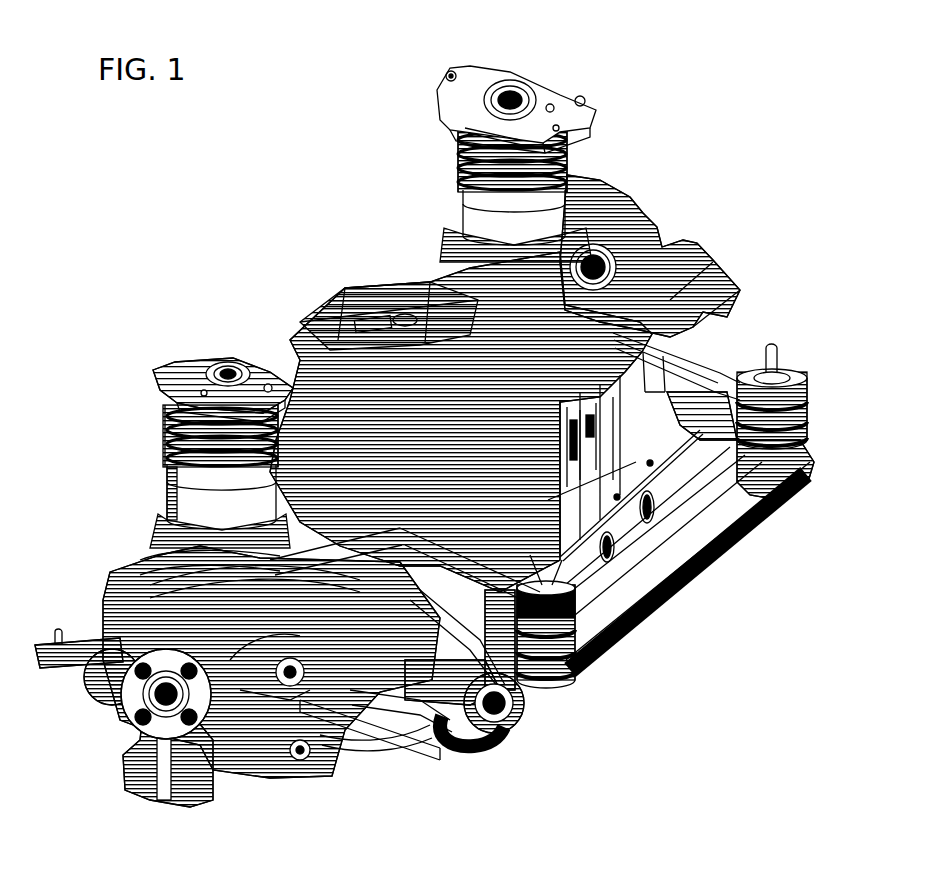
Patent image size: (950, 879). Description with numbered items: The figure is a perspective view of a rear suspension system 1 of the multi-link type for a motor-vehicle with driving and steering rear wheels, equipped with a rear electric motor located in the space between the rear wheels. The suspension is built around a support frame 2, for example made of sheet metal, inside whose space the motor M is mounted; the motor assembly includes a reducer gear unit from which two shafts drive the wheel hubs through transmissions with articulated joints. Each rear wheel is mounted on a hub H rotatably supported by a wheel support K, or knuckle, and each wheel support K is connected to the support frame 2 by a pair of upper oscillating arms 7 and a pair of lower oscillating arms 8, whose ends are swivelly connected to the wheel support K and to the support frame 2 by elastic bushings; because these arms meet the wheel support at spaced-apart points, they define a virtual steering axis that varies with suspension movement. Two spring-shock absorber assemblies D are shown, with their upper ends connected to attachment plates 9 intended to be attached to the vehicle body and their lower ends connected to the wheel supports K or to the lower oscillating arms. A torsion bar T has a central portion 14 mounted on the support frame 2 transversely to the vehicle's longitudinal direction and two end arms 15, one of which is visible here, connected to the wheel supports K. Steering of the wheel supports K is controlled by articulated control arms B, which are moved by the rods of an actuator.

The rear suspension system 1 is at (241, 290).
The support frame 2 is at (708, 346).
The upper oscillating arms 7 is at (140, 570).
The lower oscillating arms 8 is at (356, 736).
The attachment plates 9 is at (472, 80).
The central portion 14 is at (540, 688).
The end arms 15 is at (410, 726).
The articulated control arms B is at (348, 705).
The spring-shock absorber assemblies D is at (582, 160).
The hub H is at (142, 705).
The wheel support K is at (240, 727).
The motor M is at (350, 281).
The torsion bar T is at (452, 758).